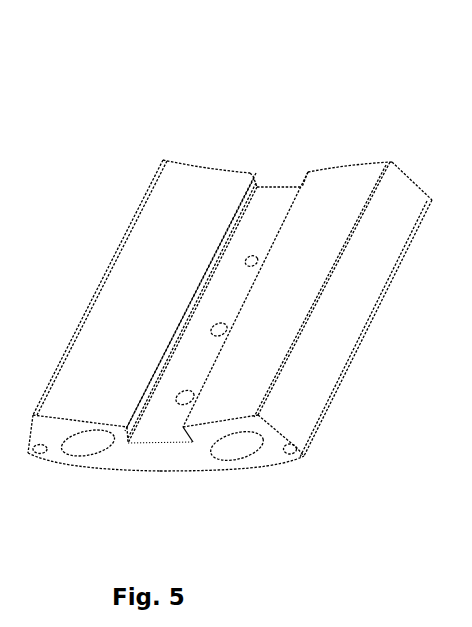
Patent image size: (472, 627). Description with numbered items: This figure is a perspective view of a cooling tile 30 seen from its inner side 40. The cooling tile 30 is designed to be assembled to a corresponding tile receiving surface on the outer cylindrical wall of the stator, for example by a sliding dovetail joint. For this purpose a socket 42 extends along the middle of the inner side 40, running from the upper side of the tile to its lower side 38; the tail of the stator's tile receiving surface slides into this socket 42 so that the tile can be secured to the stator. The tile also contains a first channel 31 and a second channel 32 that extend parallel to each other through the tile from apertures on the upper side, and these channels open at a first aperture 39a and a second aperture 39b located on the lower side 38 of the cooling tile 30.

The cooling tile 30 is at (147, 97).
The inner side 40 is at (167, 239).
The socket 42 is at (261, 218).
The lower side 38 is at (152, 453).
The second channel 32 is at (97, 435).
The first channel 31 is at (257, 433).
The first aperture 39a is at (240, 473).
The second aperture 39b is at (82, 473).